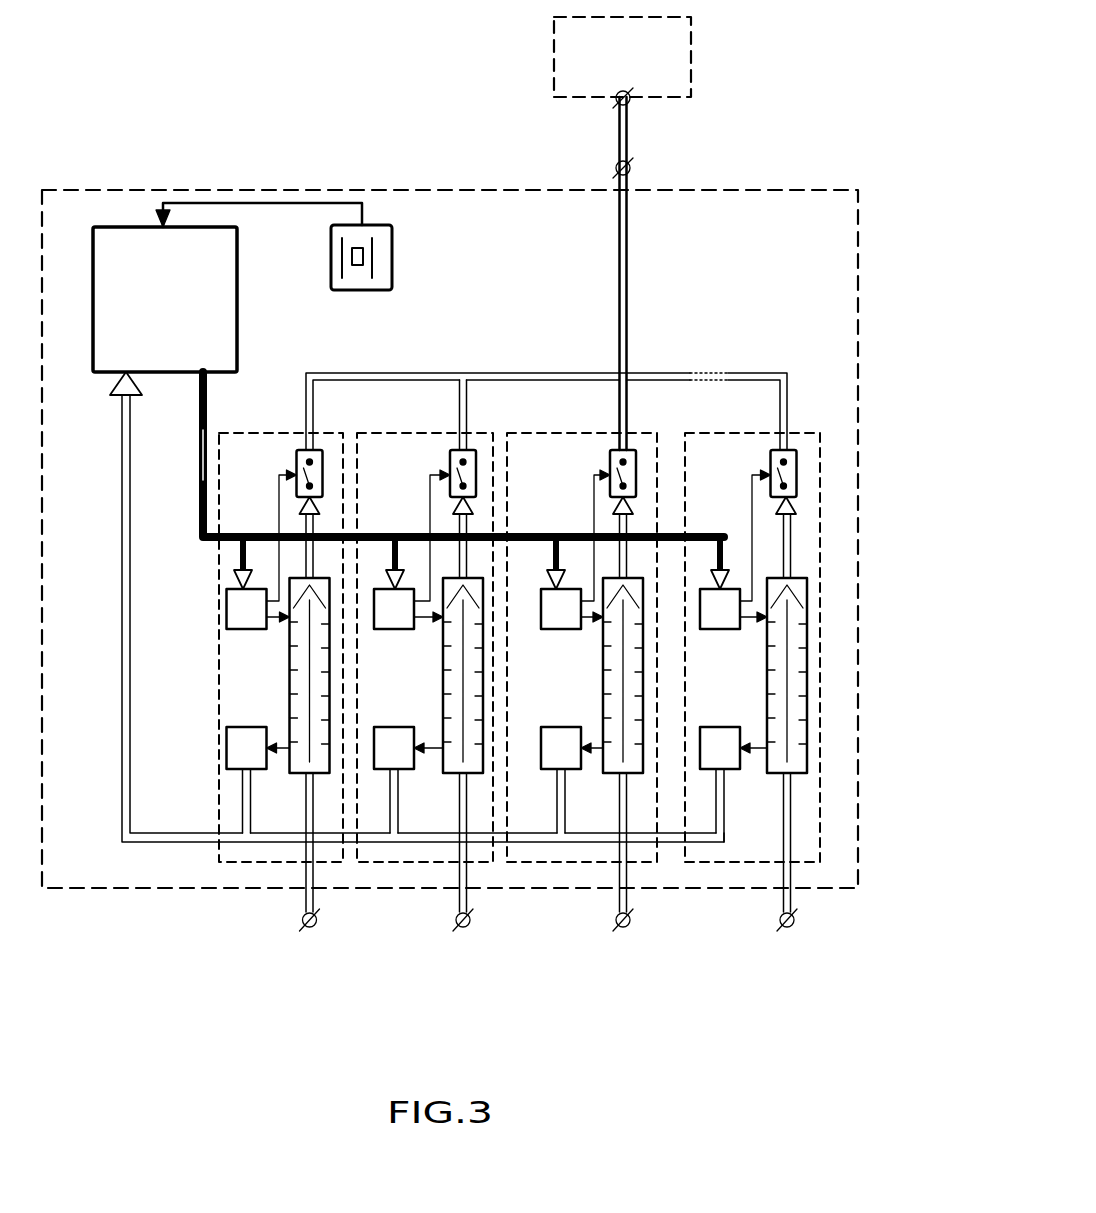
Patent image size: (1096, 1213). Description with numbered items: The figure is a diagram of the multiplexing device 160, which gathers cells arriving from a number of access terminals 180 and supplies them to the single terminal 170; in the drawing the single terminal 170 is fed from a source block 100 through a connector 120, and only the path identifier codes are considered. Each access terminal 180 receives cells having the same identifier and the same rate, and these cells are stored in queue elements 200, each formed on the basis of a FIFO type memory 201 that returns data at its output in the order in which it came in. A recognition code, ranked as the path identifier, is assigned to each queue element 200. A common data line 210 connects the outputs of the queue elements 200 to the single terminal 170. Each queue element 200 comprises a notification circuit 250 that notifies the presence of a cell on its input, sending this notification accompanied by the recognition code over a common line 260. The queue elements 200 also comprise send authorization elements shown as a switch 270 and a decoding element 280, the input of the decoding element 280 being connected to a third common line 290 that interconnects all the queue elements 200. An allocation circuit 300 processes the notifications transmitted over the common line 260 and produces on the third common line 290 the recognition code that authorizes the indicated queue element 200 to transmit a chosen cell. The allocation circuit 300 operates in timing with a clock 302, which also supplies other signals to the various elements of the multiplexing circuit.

The power source 100 is at (691, 57).
The power supply connector 120 is at (632, 102).
The single terminal 170 is at (632, 172).
The multiplexing device 160 is at (138, 890).
The allocation circuit 300 is at (237, 298).
The clock 302 is at (392, 255).
The common data line 210 is at (373, 383).
The third common line 290 is at (200, 392).
The common line 260 is at (130, 778).
The queue element 200 is at (246, 433).
The switch 270 is at (770, 455).
The decoding element 280 is at (738, 650).
The notification circuit 250 is at (725, 727).
The FIFO type memory 201 is at (767, 775).
The access terminal 180 is at (315, 927).